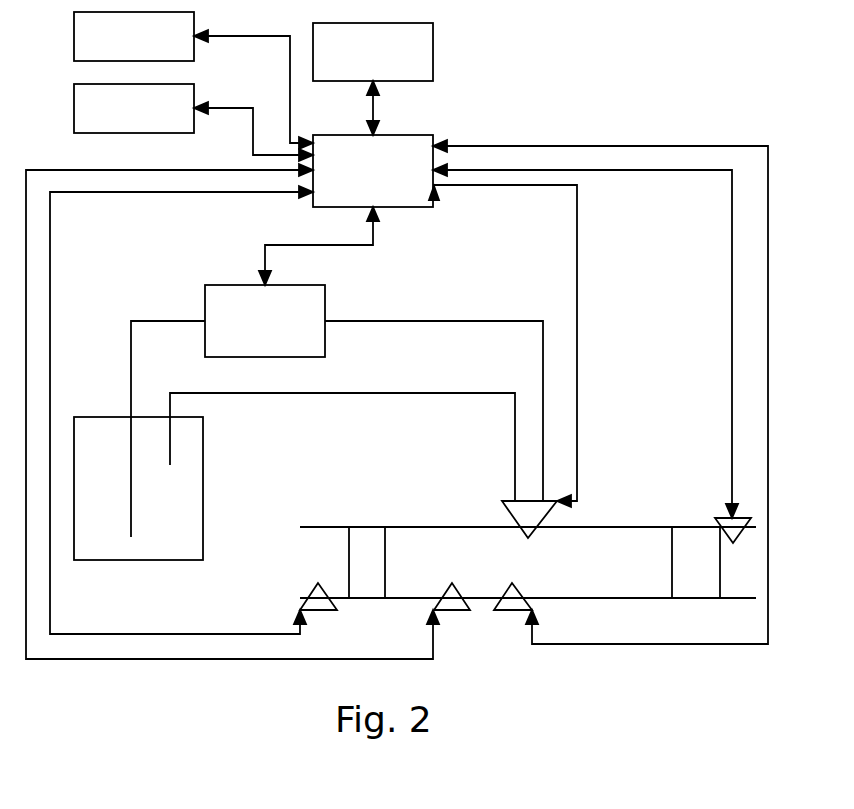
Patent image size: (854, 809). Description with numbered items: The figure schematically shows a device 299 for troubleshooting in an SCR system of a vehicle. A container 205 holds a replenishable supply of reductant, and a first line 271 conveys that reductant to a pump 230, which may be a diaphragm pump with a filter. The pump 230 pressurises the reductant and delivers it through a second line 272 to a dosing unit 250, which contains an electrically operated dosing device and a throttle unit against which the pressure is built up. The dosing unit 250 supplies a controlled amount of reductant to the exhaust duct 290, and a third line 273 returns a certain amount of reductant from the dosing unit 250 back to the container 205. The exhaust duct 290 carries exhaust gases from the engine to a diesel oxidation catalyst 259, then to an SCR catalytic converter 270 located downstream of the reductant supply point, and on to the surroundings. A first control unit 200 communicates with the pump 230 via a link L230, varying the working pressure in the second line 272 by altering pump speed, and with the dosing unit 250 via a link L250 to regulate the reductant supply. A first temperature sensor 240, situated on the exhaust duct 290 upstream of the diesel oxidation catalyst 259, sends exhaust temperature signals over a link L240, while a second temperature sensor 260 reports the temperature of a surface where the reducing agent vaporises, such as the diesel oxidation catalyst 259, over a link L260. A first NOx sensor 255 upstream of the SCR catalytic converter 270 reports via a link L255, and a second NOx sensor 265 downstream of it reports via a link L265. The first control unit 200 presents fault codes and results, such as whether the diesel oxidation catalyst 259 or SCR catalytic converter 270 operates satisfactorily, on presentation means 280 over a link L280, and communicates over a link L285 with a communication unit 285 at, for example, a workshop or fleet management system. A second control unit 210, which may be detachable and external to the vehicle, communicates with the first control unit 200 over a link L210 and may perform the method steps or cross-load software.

The first control unit 200 is at (373, 171).
The container 205 is at (203, 492).
The second control unit 210 is at (373, 52).
The pump 230 is at (265, 321).
The first temperature sensor 240 is at (315, 580).
The dosing unit 250 is at (495, 501).
The first NOx sensor 255 is at (512, 582).
The diesel oxidation catalyst 259 is at (368, 524).
The second temperature sensor 260 is at (450, 580).
The second NOx sensor 265 is at (717, 520).
The SCR catalytic converter 270 is at (696, 562).
The first line 271 is at (132, 320).
The second line 272 is at (373, 320).
The third line 273 is at (390, 393).
The presentation means 280 is at (134, 108).
The communication unit 285 is at (134, 36).
The exhaust duct 290 is at (627, 595).
The device 299 is at (512, 72).
The link L210 is at (375, 105).
The link L230 is at (262, 258).
The link L240 is at (50, 255).
The link L250 is at (576, 240).
The link L255 is at (604, 642).
The link L260 is at (433, 655).
The link L265 is at (725, 257).
The link L280 is at (253, 155).
The link L285 is at (235, 37).